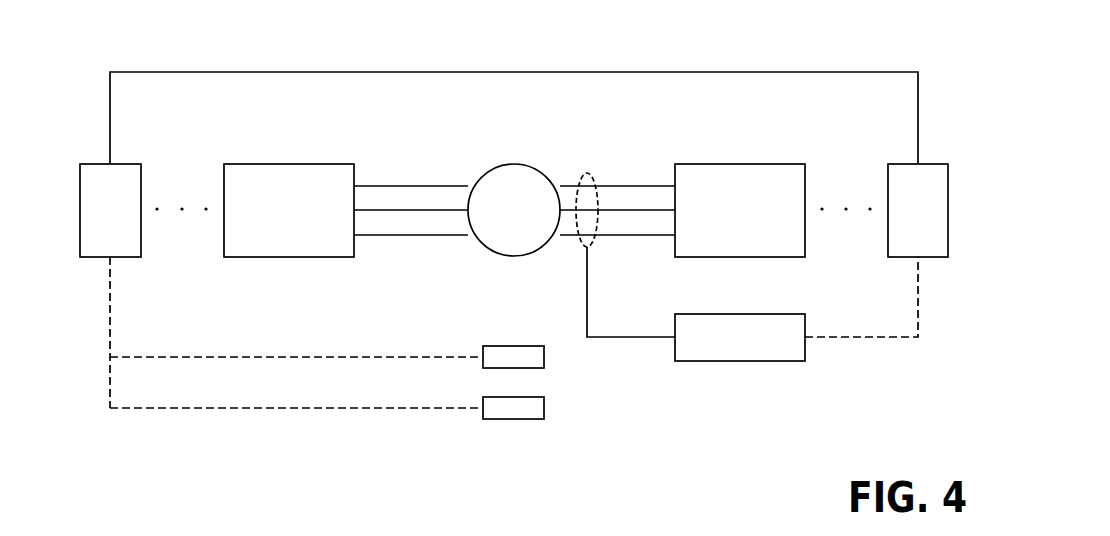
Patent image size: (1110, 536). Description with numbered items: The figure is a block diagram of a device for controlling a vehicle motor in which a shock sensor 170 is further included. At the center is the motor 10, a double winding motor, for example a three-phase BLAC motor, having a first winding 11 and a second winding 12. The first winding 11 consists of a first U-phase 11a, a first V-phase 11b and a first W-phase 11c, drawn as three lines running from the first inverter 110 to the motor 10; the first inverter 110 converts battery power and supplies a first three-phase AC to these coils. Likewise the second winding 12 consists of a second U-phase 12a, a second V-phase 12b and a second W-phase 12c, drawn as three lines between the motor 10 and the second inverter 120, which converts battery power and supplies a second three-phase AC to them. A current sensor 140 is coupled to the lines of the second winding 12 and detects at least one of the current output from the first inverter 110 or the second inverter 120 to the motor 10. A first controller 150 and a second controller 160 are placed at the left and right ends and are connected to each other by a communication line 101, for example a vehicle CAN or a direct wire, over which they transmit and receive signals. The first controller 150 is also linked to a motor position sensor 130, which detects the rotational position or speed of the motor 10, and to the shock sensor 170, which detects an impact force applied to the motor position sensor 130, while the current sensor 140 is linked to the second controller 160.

The communication line 101 is at (560, 72).
The motor 10 is at (515, 164).
The first winding 11 is at (311, 306).
The first U-phase 11a is at (391, 184).
The first V-phase 11b is at (444, 208).
The first W-phase 11c is at (414, 236).
The second winding 12 is at (415, 319).
The second U-phase 12a is at (608, 184).
The second V-phase 12b is at (656, 208).
The second W-phase 12c is at (630, 236).
The first inverter 110 is at (289, 164).
The second inverter 120 is at (741, 164).
The motor position sensor 130 is at (515, 346).
The current sensor 140 is at (740, 362).
The first controller 150 is at (90, 164).
The second controller 160 is at (945, 164).
The shock sensor 170 is at (515, 420).